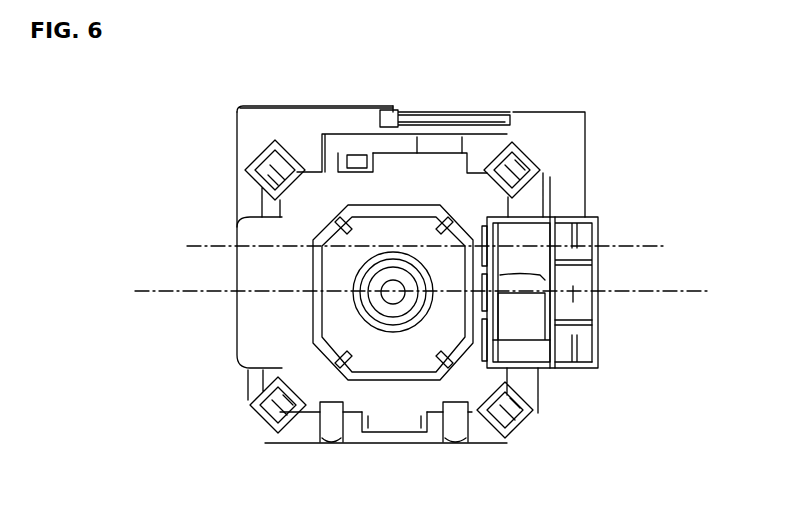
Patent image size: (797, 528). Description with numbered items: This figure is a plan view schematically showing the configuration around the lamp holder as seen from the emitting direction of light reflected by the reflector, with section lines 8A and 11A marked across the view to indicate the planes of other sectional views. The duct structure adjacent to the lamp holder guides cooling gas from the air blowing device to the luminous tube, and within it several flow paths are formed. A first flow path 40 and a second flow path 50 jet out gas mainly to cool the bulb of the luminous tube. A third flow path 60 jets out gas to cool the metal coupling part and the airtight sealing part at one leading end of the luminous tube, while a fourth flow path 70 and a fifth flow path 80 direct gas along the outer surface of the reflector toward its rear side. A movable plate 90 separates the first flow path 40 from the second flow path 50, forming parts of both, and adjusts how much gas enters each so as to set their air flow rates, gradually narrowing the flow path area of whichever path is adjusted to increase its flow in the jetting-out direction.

The section line 8A is at (203, 236).
The section line 11A is at (152, 281).
The first flow path 40 is at (515, 233).
The second flow path 50 is at (467, 343).
The third flow path 60 is at (585, 303).
The fourth flow path 70 is at (585, 233).
The fifth flow path 80 is at (585, 352).
The movable plate 90 is at (532, 322).